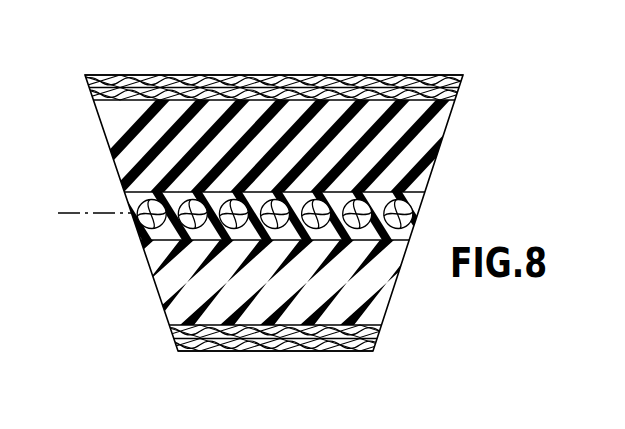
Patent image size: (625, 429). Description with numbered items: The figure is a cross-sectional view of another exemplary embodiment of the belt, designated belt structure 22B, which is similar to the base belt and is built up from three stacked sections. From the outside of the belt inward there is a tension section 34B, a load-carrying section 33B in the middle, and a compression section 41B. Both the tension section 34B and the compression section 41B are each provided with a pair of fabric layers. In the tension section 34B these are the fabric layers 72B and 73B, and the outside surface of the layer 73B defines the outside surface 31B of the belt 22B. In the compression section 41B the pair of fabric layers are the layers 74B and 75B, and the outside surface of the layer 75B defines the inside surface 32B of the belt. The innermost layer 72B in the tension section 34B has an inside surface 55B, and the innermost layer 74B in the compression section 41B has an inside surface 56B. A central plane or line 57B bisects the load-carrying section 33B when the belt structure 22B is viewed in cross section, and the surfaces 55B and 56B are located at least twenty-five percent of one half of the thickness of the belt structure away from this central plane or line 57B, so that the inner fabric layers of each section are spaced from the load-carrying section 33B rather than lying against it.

The belt structure 22B is at (341, 190).
The outside surface 31B is at (224, 75).
The inside surface 32B is at (259, 352).
The fabric layer 73B is at (382, 78).
The fabric layer 72B is at (450, 97).
The tension section 34B is at (455, 145).
The load-carrying section 33B is at (442, 214).
The compression section 41B is at (416, 294).
The fabric layer 74B is at (370, 332).
The fabric layer 75B is at (370, 347).
The inside surface 55B is at (130, 102).
The inside surface 56B is at (207, 325).
The central plane or line 57B is at (91, 213).